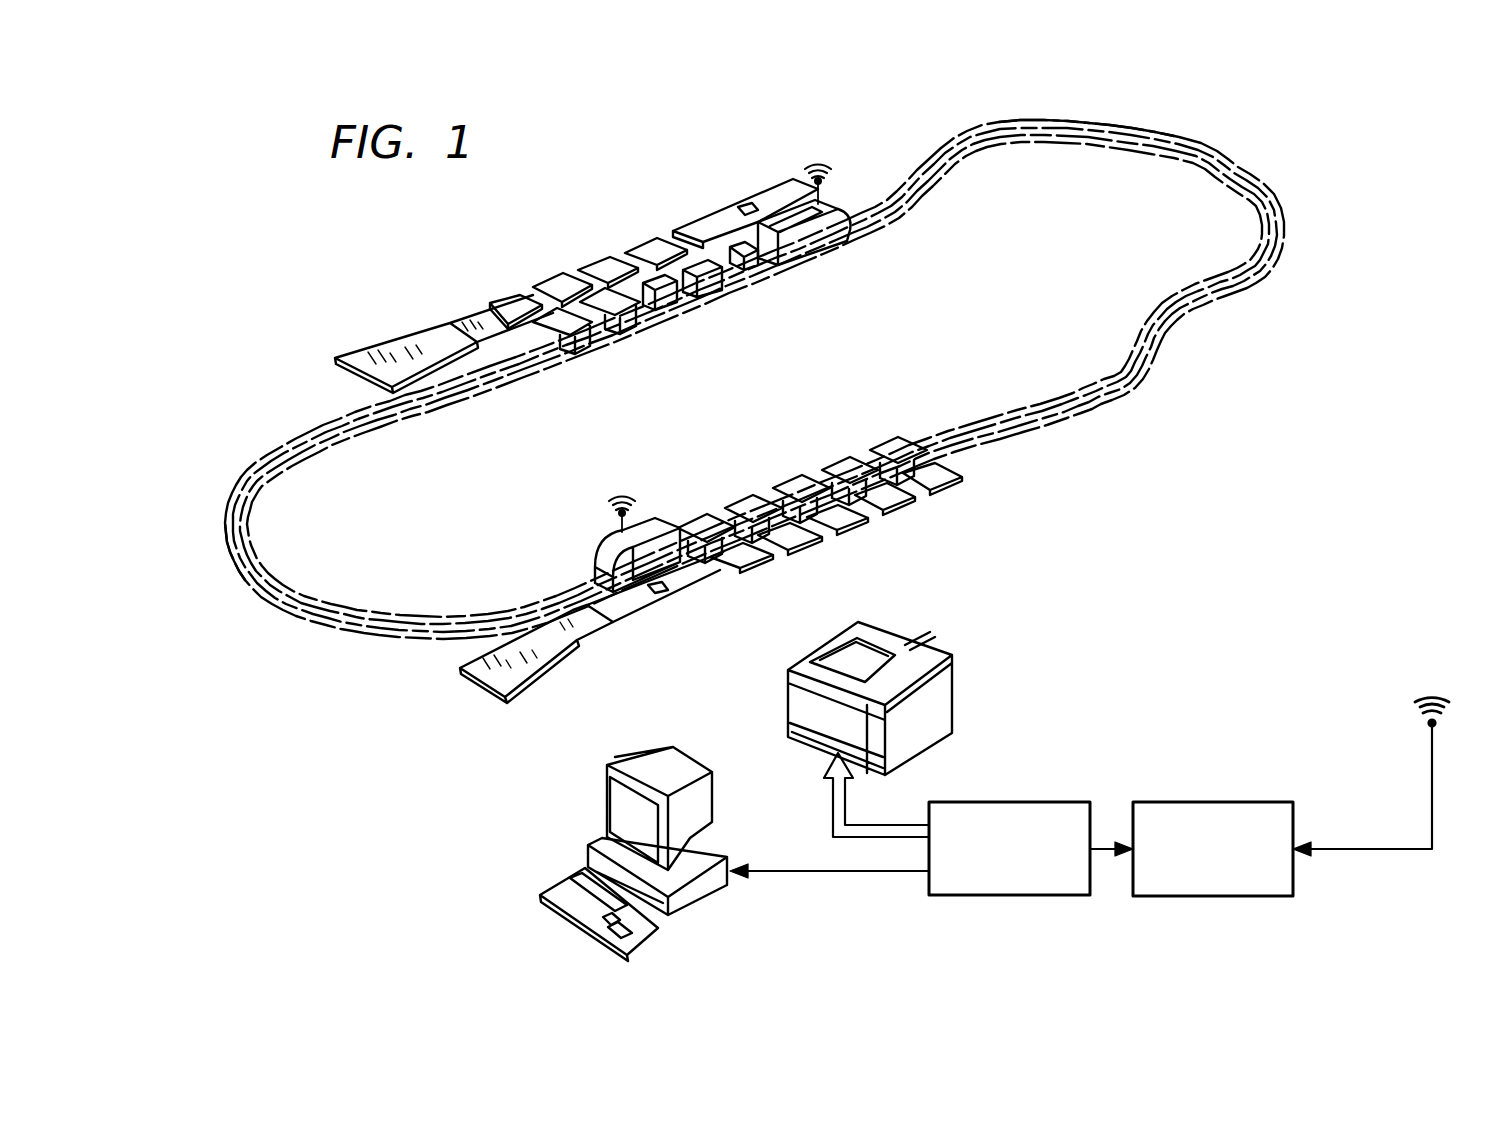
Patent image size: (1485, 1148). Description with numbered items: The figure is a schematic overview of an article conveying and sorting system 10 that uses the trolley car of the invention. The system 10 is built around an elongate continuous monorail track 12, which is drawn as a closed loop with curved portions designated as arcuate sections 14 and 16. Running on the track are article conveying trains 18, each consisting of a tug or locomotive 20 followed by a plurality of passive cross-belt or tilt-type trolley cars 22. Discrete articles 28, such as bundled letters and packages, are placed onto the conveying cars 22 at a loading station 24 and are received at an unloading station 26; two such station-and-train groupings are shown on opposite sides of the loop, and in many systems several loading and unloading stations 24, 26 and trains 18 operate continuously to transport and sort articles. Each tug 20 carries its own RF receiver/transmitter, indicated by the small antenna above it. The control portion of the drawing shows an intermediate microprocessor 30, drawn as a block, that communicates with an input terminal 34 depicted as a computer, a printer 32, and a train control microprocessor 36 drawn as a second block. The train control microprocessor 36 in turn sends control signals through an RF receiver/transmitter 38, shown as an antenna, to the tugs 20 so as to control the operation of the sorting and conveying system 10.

The article conveying and sorting system 10 is at (277, 400).
The elongate continuous monorail track 12 is at (920, 168).
The arcuate section 14 is at (1177, 137).
The arcuate section 16 is at (242, 575).
The article conveying train 18 is at (713, 375).
The tug or locomotive 20 is at (822, 208).
The trolley car 22 is at (715, 290).
The loading station 24 is at (610, 637).
The unloading station 26 is at (537, 225).
The discrete article 28 is at (745, 205).
The intermediate microprocessor 30 is at (1008, 802).
The printer 32 is at (790, 698).
The input terminal 34 is at (607, 805).
The train control microprocessor 36 is at (1210, 802).
The RF receiver/transmitter 38 is at (1432, 772).